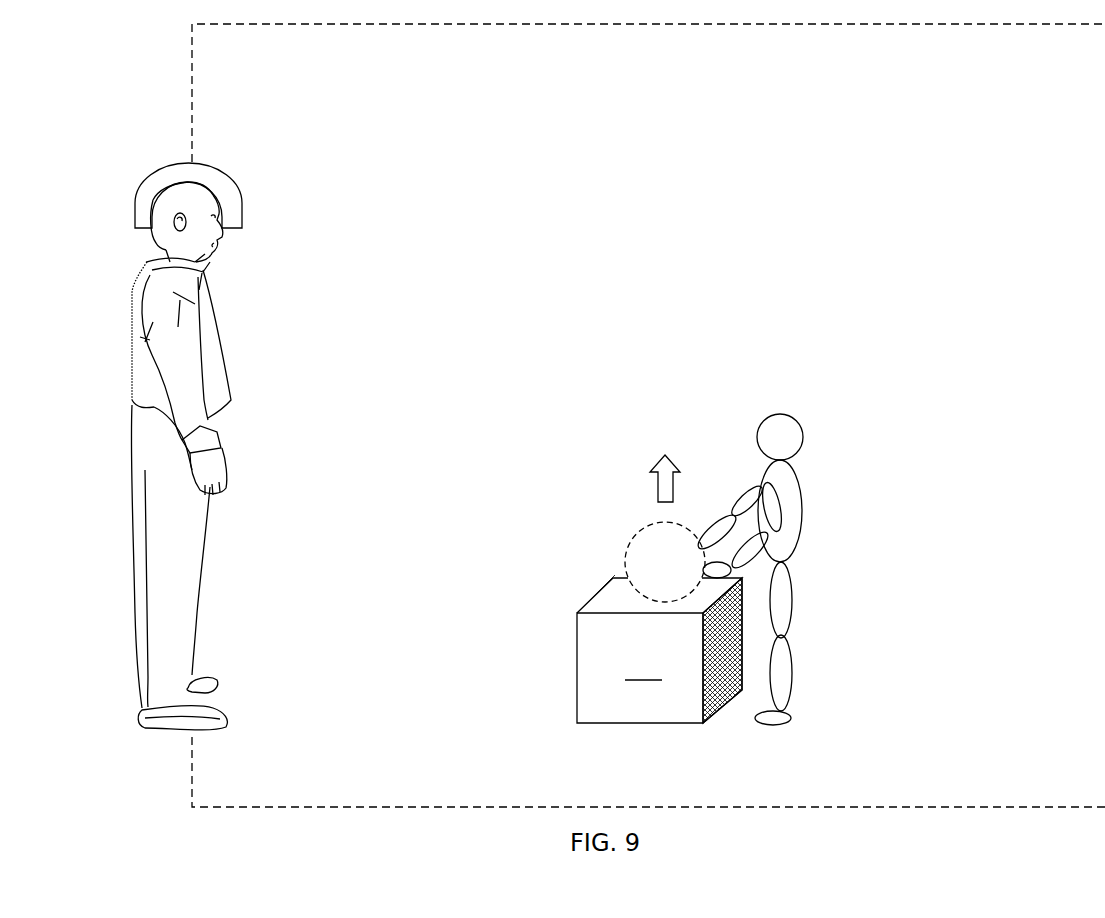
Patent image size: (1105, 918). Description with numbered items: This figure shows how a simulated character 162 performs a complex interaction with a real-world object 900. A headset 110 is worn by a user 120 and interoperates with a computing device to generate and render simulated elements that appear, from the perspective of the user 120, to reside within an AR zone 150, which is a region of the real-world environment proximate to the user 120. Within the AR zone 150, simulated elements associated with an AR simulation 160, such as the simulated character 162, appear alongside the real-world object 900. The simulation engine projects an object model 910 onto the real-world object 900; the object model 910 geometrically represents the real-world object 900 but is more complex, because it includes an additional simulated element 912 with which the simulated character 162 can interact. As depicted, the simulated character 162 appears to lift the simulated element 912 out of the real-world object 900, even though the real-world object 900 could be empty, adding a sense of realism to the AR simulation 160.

The headset 110 is at (158, 168).
The user 120 is at (132, 342).
The AR zone 150 is at (1066, 85).
The AR simulation 160 is at (378, 102).
The simulated character 162 is at (783, 413).
The real-world object 900 is at (643, 670).
The object model 910 is at (620, 649).
The simulated element 912 is at (626, 548).